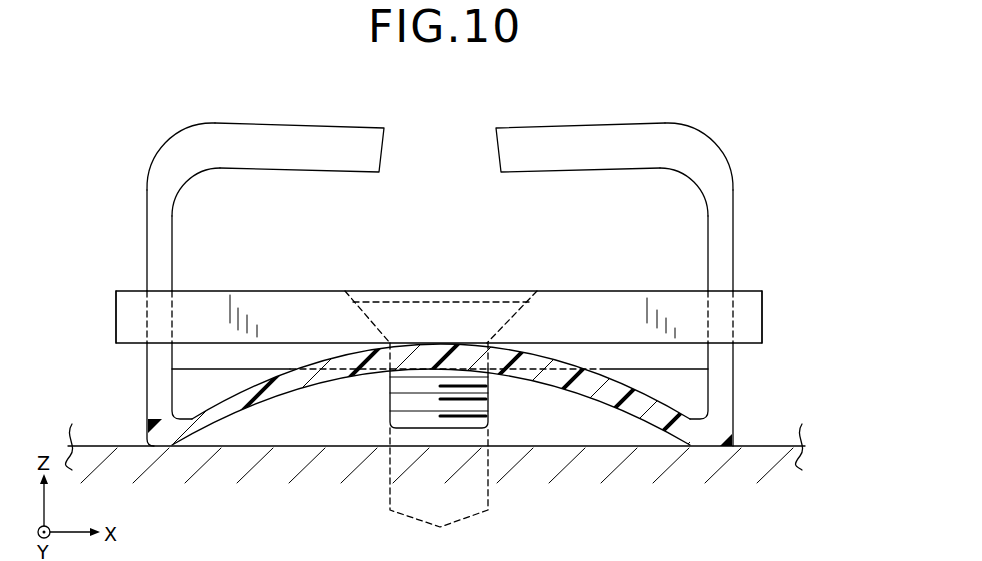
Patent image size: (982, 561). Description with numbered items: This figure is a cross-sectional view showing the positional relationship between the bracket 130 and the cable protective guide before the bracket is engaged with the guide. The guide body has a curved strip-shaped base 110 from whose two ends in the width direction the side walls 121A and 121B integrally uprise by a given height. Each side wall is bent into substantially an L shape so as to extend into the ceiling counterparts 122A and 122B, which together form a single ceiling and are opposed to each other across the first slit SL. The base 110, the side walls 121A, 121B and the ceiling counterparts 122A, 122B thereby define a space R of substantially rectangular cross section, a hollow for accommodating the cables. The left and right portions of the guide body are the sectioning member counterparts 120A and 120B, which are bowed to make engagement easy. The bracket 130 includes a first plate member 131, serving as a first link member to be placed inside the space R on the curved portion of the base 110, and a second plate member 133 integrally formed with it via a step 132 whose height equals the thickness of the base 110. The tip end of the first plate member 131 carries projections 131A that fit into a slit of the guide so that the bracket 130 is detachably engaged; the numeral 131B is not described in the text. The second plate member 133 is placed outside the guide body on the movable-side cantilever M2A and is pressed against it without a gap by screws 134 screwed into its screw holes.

The base 110 is at (327, 375).
The sectioning member counterpart 120A is at (213, 253).
The sectioning member counterpart 120B is at (663, 253).
The side wall 121A is at (160, 242).
The side wall 121B is at (722, 242).
The ceiling counterpart 122A is at (320, 140).
The ceiling counterpart 122B is at (603, 140).
The bracket 130 is at (445, 420).
The first plate member 131 is at (441, 407).
The projection 131A is at (133, 317).
The right end portion of base plate 131B is at (747, 318).
The step 132 is at (499, 401).
The second plate member 133 is at (635, 355).
The screw 134 is at (384, 397).
The first slit SL is at (430, 151).
The space R is at (446, 249).
The cantilever M2A is at (798, 522).